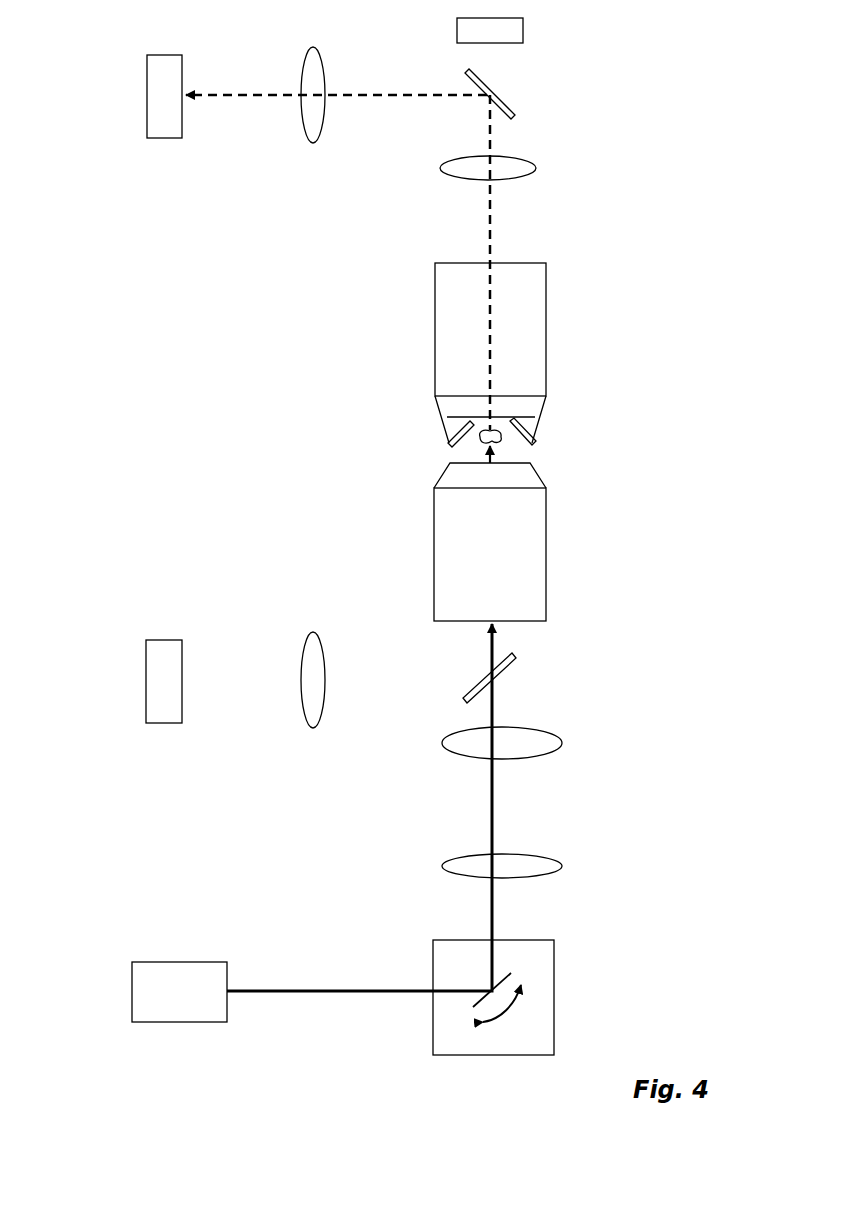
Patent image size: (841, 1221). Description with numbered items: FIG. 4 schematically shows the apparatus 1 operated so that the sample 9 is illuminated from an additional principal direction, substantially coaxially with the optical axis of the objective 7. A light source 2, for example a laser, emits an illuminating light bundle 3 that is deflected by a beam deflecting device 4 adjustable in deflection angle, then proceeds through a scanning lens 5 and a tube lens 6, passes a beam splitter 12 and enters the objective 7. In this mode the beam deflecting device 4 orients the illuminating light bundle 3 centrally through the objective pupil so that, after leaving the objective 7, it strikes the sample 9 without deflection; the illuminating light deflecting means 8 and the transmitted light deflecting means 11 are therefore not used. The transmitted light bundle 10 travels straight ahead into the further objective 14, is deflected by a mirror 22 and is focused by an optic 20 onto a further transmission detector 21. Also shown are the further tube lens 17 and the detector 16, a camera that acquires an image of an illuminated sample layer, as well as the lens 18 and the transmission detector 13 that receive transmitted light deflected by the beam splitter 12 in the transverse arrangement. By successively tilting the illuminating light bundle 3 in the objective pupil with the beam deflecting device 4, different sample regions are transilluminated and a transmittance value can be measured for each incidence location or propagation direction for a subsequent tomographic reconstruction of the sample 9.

The apparatus 1 is at (114, 243).
The light source 2 is at (203, 988).
The illuminating light bundle 3 is at (347, 988).
The beam deflecting device 4 is at (536, 947).
The scanning lens 5 is at (462, 867).
The tube lens 6 is at (470, 743).
The objective 7 is at (445, 553).
The illuminating light deflecting means 8 is at (533, 440).
The sample 9 is at (500, 437).
The transmitted light bundle 10 is at (492, 232).
The transmitted light deflecting means 11 is at (450, 440).
The beam splitter 12 is at (518, 668).
The transmission detector 13 is at (172, 658).
The further objective 14 is at (537, 349).
The detector 16 is at (510, 33).
The further tube lens 17 is at (507, 165).
The lens 18 is at (310, 657).
The optic 20 is at (318, 75).
The further transmission detector 21 is at (158, 78).
The mirror 22 is at (505, 98).